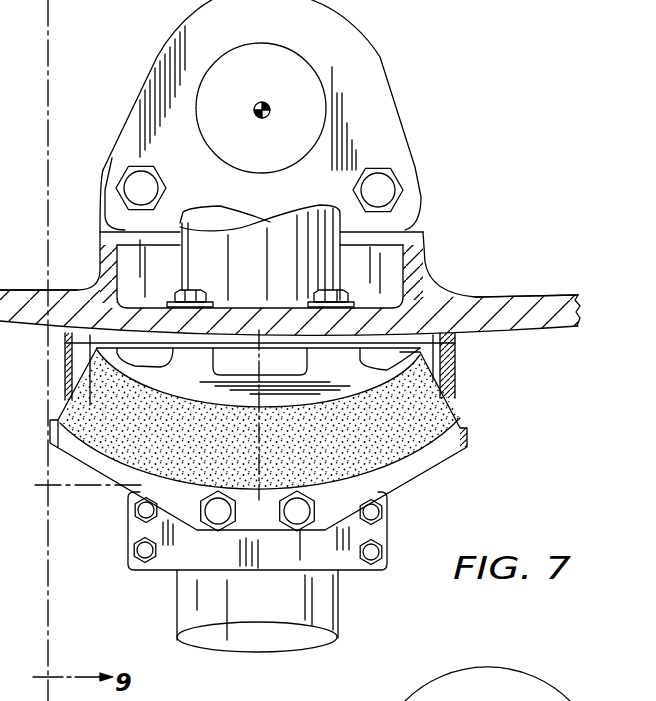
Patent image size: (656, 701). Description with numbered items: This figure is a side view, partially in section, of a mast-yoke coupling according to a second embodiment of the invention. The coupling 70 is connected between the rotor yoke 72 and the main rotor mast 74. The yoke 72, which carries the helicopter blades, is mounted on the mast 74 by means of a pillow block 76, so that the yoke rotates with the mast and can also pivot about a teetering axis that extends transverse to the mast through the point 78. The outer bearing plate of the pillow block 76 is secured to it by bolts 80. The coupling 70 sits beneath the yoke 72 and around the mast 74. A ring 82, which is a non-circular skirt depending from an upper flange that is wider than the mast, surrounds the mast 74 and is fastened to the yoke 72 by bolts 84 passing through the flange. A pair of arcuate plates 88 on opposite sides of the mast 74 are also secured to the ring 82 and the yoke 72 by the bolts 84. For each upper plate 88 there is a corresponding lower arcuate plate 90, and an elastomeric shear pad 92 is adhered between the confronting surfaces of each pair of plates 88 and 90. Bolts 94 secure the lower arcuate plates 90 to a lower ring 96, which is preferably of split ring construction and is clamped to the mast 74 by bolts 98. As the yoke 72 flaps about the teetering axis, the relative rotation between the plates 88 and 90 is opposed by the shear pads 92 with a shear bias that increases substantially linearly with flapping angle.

The coupling 70 is at (485, 240).
The rotor yoke 72 is at (551, 300).
The main rotor mast 74 is at (305, 607).
The pillow block 76 is at (378, 80).
The point 78 is at (263, 101).
The bolts 80 is at (137, 188).
The ring 82 is at (443, 366).
The bolts 84 is at (323, 290).
The arcuate plates 88 is at (352, 377).
The lower arcuate plate 90 is at (422, 460).
The elastomeric shear pad 92 is at (404, 427).
The bolts 94 is at (295, 513).
The lower ring 96 is at (192, 564).
The bolts 98 is at (133, 550).